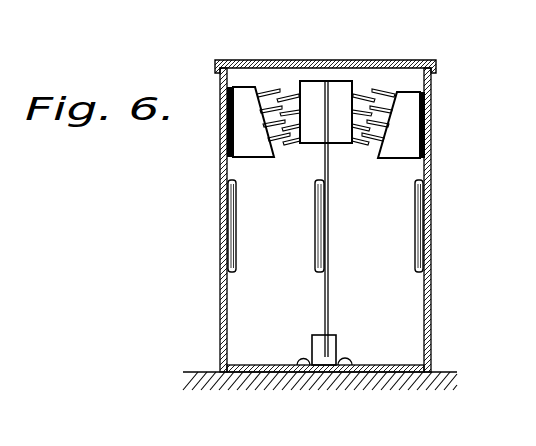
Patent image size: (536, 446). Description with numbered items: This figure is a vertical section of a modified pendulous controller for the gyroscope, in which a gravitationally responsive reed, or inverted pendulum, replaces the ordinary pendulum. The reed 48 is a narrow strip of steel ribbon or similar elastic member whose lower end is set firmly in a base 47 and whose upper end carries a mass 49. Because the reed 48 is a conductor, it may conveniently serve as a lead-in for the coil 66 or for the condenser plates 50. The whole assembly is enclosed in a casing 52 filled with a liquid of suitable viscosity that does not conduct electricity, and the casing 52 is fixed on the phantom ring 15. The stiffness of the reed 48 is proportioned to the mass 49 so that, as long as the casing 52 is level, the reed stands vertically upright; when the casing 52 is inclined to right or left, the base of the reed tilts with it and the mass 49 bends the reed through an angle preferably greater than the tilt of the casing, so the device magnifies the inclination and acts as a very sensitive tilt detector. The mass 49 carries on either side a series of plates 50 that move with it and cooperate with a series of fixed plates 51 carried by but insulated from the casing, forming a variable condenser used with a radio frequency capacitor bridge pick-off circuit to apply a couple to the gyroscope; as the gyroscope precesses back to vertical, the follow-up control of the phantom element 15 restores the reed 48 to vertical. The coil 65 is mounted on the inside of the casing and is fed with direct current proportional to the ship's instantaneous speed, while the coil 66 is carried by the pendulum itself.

The phantom ring 15 is at (190, 372).
The base 47 is at (334, 342).
The reed 48 is at (324, 294).
The mass 49 is at (346, 83).
The plates 50 is at (287, 95).
The fixed plates 51 is at (386, 106).
The casing 52 is at (432, 168).
The coil 65 is at (236, 243).
The coil 66 is at (315, 213).